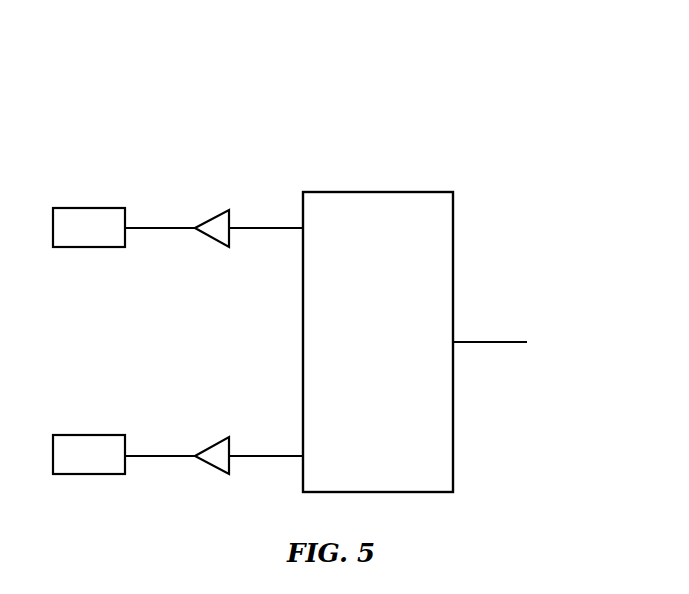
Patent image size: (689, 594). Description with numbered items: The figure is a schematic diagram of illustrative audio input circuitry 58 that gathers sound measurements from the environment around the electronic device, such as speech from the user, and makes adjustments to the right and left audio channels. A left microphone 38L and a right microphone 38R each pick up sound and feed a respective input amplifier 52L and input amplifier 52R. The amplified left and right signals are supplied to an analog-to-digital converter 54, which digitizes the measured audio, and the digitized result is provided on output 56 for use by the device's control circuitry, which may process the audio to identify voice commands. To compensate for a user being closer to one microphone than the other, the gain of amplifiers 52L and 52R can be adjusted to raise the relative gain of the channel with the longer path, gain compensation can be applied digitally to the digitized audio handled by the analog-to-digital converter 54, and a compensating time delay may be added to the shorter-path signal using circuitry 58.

The left microphone 38L is at (94, 208).
The right microphone 38R is at (79, 435).
The input amplifier 52L is at (214, 211).
The input amplifier 52R is at (216, 436).
The analog-to-digital converter 54 is at (389, 192).
The output 56 is at (495, 342).
The audio input circuitry 58 is at (371, 86).